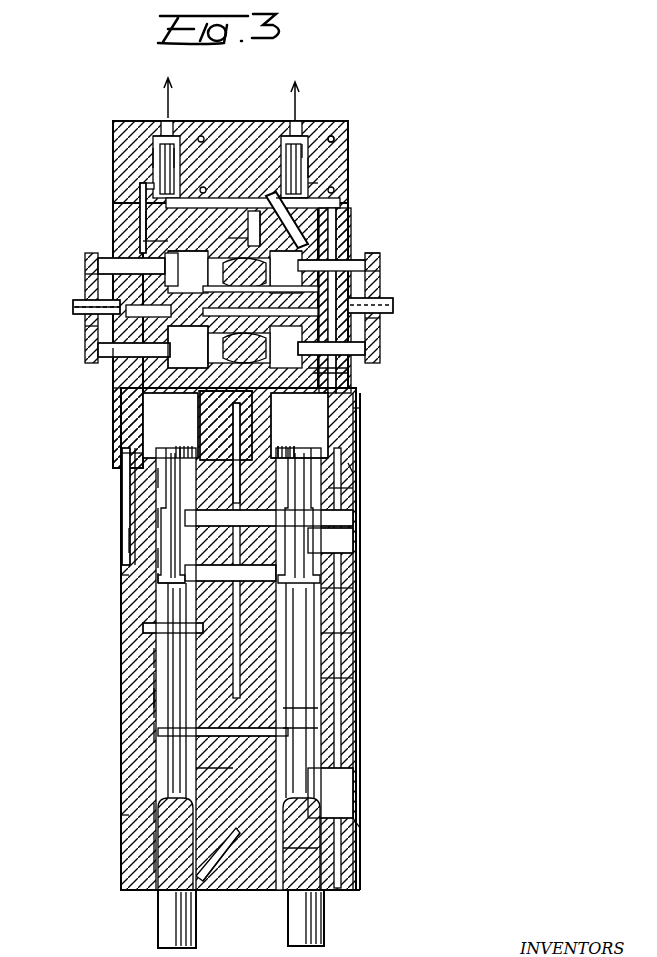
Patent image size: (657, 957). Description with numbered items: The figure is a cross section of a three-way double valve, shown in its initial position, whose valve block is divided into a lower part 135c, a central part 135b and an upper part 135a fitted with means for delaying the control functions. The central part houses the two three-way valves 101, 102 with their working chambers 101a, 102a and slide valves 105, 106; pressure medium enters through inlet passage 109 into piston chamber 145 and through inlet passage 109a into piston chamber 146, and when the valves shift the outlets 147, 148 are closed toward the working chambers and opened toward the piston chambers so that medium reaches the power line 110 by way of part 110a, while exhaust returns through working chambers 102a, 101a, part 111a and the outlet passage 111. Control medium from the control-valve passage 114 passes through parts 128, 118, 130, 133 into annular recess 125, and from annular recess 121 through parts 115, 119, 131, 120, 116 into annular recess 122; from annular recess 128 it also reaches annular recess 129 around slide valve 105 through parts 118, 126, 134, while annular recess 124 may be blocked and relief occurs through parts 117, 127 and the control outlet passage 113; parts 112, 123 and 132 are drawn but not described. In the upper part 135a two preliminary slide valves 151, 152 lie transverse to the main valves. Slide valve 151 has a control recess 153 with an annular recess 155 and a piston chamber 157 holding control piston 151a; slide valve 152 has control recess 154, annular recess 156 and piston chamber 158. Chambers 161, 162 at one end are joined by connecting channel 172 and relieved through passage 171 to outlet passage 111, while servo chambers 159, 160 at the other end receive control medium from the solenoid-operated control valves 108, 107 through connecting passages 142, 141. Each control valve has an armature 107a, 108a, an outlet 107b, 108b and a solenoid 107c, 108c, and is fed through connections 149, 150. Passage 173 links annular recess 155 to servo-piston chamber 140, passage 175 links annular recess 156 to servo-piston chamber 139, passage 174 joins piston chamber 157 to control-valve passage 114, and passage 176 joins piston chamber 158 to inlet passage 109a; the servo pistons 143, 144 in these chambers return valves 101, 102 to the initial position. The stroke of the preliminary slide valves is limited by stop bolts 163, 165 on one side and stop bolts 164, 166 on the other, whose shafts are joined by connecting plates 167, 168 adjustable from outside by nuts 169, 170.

The three-way valve 101 is at (147, 510).
The working chamber 101a is at (152, 588).
The three-way valve 102 is at (335, 496).
The working chamber 102a is at (320, 592).
The slide valve 105 is at (160, 917).
The slide valve 106 is at (290, 920).
The control valve 107 is at (148, 130).
The armature 107a is at (145, 148).
The outlet 107b is at (163, 125).
The solenoid 107c is at (170, 142).
The control valve 108 is at (275, 165).
The armature 108a is at (300, 157).
The outlet 108b is at (275, 145).
The solenoid 108c is at (326, 131).
The inlet passage 109 is at (95, 465).
The inlet passage 109a is at (300, 450).
The power line 110 is at (405, 512).
The part 110a is at (118, 568).
The outlet passage 111 is at (148, 585).
The part 111a is at (250, 567).
The spool land 112 is at (170, 662).
The control outlet passage 113 is at (145, 802).
The control-valve passage 114 is at (313, 193).
The part 115 is at (150, 721).
The part 116 is at (305, 700).
The part 117 is at (150, 845).
The part 118 is at (312, 842).
The part 119 is at (150, 646).
The part 120 is at (320, 628).
The annular recess 121 is at (147, 682).
The annular recess 122 is at (318, 675).
The cross passage 123 is at (185, 730).
The annular recess 124 is at (312, 716).
The annular recess 125 is at (185, 760).
The part 126 is at (318, 762).
The part 127 is at (150, 827).
The annular recess 128 is at (350, 820).
The annular recess 129 is at (160, 852).
The part 130 is at (325, 880).
The part 131 is at (150, 624).
The outlet passage 132 is at (117, 807).
The part 133 is at (256, 880).
The part 134 is at (226, 880).
The upper part of the valve block 135a is at (118, 152).
The central part of the valve block 135b is at (120, 532).
The lower part of the valve block 135c is at (135, 885).
The servo-piston chamber 139 is at (150, 422).
The servo-piston chamber 140 is at (300, 410).
The connecting passage 141 is at (140, 147).
The connecting passage 142 is at (294, 137).
The servo piston 143 is at (140, 446).
The servo piston 144 is at (325, 432).
The piston chamber 145 is at (155, 470).
The piston chamber 146 is at (342, 458).
The outlet 147 is at (158, 545).
The outlet 148 is at (312, 532).
The connection 149 is at (134, 190).
The connection 150 is at (300, 180).
The preliminary slide valve 151 is at (175, 245).
The control piston 151a is at (372, 262).
The preliminary slide valve 152 is at (205, 340).
The control recess 153 is at (258, 230).
The control recess 154 is at (330, 365).
The annular recess 155 is at (136, 213).
The annular recess 156 is at (200, 362).
The piston chamber 157 is at (280, 236).
The piston chamber 158 is at (335, 380).
The servo chamber 159 is at (300, 249).
The servo chamber 160 is at (335, 371).
The chamber 161 is at (150, 233).
The chamber 162 is at (125, 348).
The stop bolt 163 is at (82, 266).
The stop bolt 164 is at (360, 258).
The stop bolt 165 is at (107, 333).
The stop bolt 166 is at (375, 338).
The connecting plate 167 is at (78, 322).
The connecting plate 168 is at (375, 312).
The nut 169 is at (72, 302).
The nut 170 is at (385, 298).
The passage 171 is at (66, 292).
The connecting channel 172 is at (78, 344).
The passage 173 is at (222, 230).
The passage 174 is at (277, 212).
The passage 175 is at (130, 410).
The passage 176 is at (325, 394).